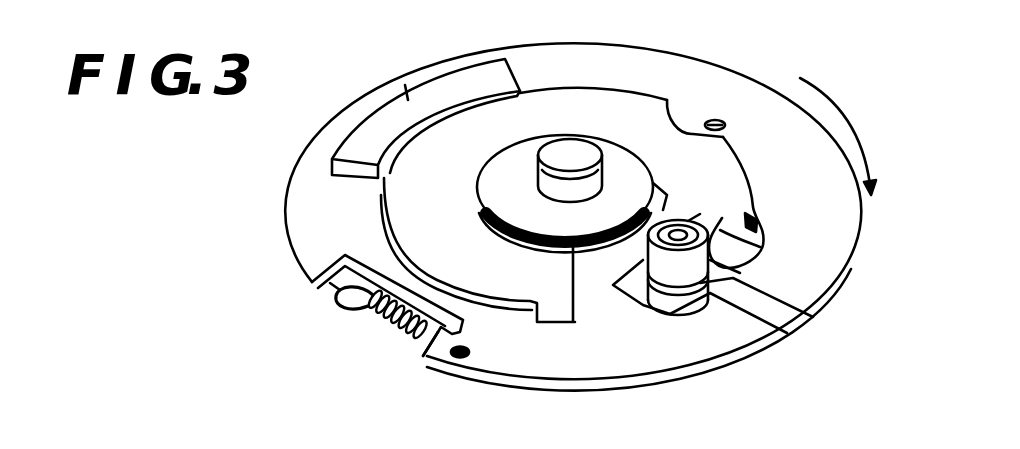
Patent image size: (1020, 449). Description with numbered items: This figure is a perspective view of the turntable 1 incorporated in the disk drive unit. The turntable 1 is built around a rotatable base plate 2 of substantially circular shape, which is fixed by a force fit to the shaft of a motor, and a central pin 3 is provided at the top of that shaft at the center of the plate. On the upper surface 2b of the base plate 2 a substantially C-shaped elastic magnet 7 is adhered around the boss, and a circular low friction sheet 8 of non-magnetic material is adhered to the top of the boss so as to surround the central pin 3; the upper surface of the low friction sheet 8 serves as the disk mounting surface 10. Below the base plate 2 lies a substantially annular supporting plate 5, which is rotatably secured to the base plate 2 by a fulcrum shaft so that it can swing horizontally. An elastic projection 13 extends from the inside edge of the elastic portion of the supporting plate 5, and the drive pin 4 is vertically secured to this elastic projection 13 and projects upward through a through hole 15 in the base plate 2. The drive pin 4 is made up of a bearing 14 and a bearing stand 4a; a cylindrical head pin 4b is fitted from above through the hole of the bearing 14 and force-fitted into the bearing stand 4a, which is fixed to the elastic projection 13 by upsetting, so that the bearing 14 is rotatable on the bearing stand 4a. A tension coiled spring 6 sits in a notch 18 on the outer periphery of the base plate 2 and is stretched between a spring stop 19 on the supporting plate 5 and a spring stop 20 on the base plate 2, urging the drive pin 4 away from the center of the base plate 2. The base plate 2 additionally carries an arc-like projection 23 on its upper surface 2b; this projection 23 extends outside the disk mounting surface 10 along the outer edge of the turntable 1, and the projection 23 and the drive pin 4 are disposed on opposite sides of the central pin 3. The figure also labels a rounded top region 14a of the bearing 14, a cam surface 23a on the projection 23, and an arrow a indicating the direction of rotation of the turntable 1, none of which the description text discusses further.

The turntable 1 is at (728, 366).
The rotatable base plate 2 is at (304, 200).
The upper surface of the base plate 2b is at (332, 243).
The central pin 3 is at (575, 152).
The drive pin 4 is at (710, 217).
The bearing stand 4a is at (745, 322).
The cylindrical head pin 4b is at (688, 221).
The supporting plate 5 is at (333, 281).
The spring 6 is at (392, 335).
The magnet 7 is at (650, 112).
The low friction sheet 8 is at (620, 158).
The disk mounting surface 10 is at (524, 160).
The elastic projection 13 is at (650, 313).
The bearing 14 is at (762, 247).
The roller shaft 14a is at (680, 250).
The through hole 15 is at (813, 313).
The notch 18 is at (432, 346).
The spring stop 19 is at (340, 311).
The spring stop 20 is at (470, 348).
The arc-like projection 23 is at (352, 151).
The cam surface 23a is at (410, 107).
The rotation direction a is at (850, 130).